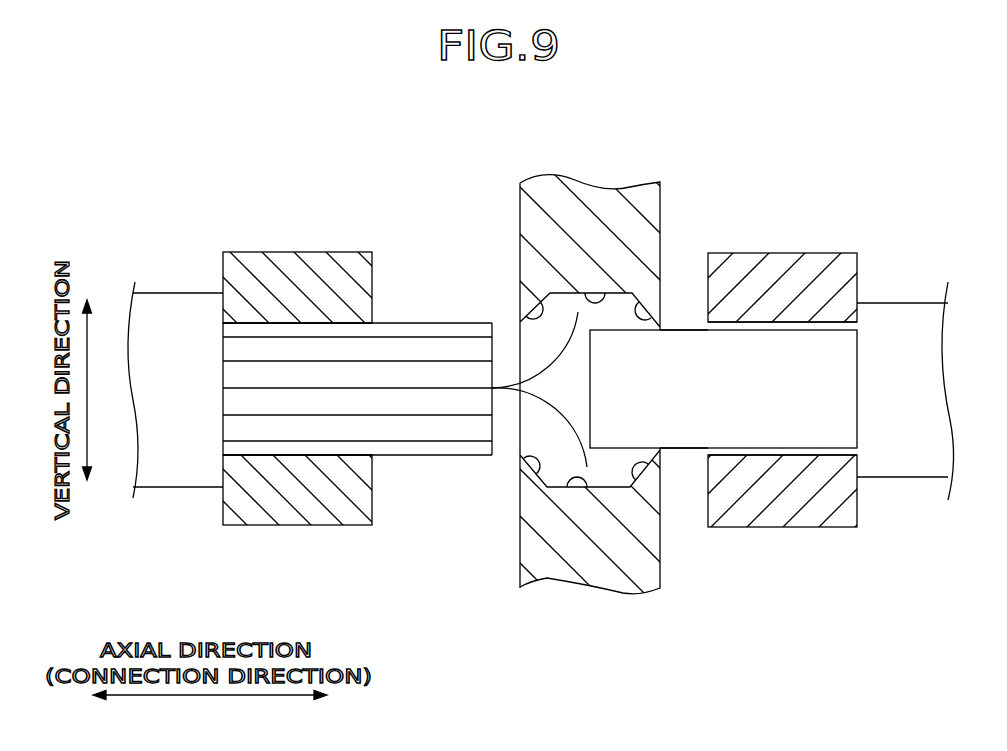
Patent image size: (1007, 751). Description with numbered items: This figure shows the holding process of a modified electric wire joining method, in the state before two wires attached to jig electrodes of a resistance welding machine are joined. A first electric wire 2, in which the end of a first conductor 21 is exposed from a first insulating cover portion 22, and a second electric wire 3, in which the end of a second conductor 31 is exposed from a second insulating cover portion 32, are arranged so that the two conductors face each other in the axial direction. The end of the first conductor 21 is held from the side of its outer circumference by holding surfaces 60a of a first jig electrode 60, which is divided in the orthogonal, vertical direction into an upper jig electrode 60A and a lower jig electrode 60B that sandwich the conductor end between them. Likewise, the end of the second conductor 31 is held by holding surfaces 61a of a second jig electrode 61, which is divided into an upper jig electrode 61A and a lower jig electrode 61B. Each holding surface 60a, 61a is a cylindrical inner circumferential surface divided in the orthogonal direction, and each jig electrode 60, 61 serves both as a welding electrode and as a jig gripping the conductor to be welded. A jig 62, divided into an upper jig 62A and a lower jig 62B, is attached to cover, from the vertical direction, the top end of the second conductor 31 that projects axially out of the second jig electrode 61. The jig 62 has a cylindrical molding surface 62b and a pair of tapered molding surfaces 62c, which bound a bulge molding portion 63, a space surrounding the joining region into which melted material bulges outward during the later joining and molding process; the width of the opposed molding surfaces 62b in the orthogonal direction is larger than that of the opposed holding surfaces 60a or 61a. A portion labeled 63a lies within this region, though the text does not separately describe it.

The first electric wire 2 is at (293, 200).
The first conductor 21 is at (278, 320).
The first insulating cover portion 22 is at (162, 290).
The second electric wire 3 is at (938, 200).
The second conductor 31 is at (800, 323).
The second insulating cover portion 32 is at (920, 298).
The first jig electrode 60 is at (394, 400).
The upper jig electrode 60A is at (355, 250).
The lower jig electrode 60B is at (243, 533).
The holding surface 60a is at (323, 330).
The second jig electrode 61 is at (653, 396).
The upper jig electrode 61A is at (732, 250).
The lower jig electrode 61B is at (825, 532).
The holding surface 61a is at (758, 330).
The jig 62 is at (533, 385).
The upper jig 62A is at (548, 178).
The lower jig 62B is at (620, 598).
The molding surface 62b is at (603, 292).
The tapered molding surface 62c is at (520, 328).
The bulge molding portion 63 is at (628, 355).
The elastic contact portion of connecting terminal 63a is at (491, 392).